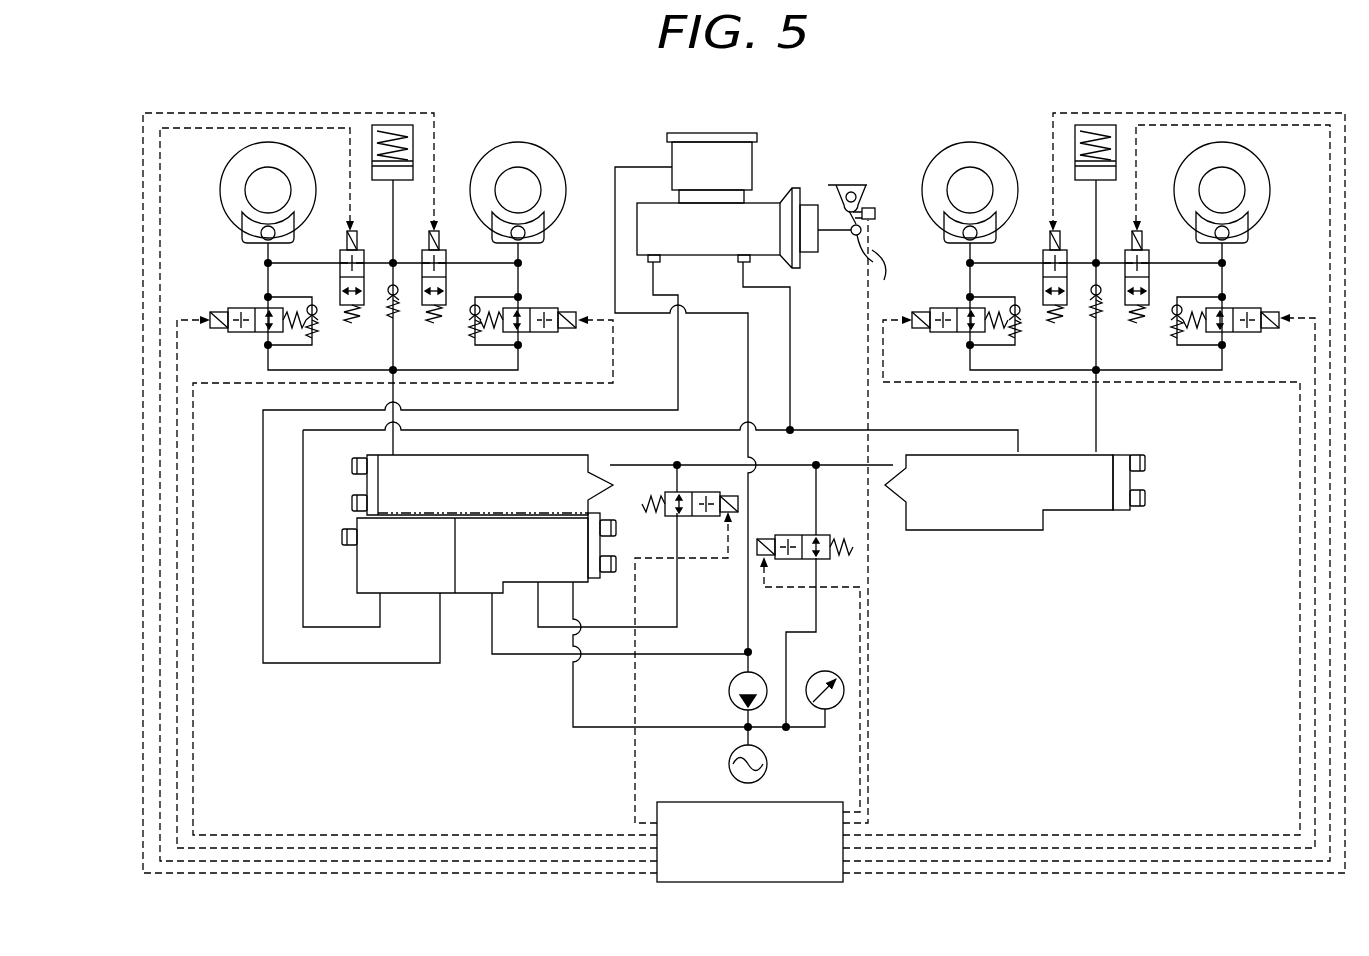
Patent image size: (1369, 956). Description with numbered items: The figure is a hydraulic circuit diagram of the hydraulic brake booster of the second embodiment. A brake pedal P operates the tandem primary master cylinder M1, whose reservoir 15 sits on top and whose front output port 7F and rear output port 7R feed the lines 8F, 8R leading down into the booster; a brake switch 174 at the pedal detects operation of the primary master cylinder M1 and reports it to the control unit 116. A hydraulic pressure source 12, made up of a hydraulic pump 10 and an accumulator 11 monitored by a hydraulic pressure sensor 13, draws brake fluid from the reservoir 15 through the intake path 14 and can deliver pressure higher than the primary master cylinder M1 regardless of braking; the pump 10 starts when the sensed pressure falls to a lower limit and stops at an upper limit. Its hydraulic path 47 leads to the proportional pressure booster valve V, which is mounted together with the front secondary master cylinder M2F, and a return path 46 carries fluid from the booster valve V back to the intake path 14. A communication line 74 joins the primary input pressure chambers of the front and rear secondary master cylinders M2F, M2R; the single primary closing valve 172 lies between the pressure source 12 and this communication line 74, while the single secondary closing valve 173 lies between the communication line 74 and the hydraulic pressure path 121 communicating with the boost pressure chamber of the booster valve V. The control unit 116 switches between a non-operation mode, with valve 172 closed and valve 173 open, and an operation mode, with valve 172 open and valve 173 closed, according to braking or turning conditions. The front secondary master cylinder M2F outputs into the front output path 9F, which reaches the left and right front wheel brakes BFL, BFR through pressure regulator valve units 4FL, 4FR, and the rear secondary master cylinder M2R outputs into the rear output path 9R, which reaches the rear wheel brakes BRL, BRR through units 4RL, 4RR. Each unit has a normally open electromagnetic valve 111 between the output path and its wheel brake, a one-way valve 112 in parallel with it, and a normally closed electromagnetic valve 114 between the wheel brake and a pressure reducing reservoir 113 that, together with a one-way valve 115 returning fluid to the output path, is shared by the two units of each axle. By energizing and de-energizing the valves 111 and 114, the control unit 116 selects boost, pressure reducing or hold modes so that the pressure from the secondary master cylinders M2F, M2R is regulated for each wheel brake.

The left front wheel brake BFL is at (226, 222).
The right front wheel brake BFR is at (555, 152).
The left rear wheel brake BRL is at (935, 156).
The right rear wheel brake BRR is at (1257, 155).
The pressure reducing reservoir 113 is at (414, 138).
The normally closed electromagnetic valve 114 is at (340, 250).
The one-way valve 115 is at (399, 300).
The one-way valve 112 is at (318, 318).
The normally open electromagnetic valve 111 is at (245, 333).
The pressure regulator valve unit 4FL is at (262, 352).
The pressure regulator valve unit 4FR is at (541, 292).
The pressure regulator valve unit 4RL is at (950, 293).
The pressure regulator valve unit 4RR is at (1240, 335).
The reservoir 15 is at (698, 177).
The primary master cylinder M1 is at (690, 242).
The front output port 7F is at (660, 263).
The rear output port 7R is at (752, 263).
The brake switch 174 is at (860, 210).
The brake pedal P is at (880, 262).
The front brake line 8F is at (338, 664).
The rear brake line 8R is at (836, 430).
The front output path 9F is at (393, 440).
The rear output path 9R is at (1100, 432).
The intake path 14 is at (748, 372).
The communication line 74 is at (708, 463).
The hydraulic pressure path 121 is at (677, 590).
The return path 46 is at (522, 656).
The hydraulic path 47 is at (590, 730).
The front secondary master cylinder M2F is at (448, 500).
The rear secondary master cylinder M2R is at (951, 505).
The proportional pressure booster valve V is at (517, 558).
The primary closing valve 172 is at (796, 535).
The secondary closing valve 173 is at (668, 513).
The hydraulic pump 10 is at (729, 694).
The accumulator 11 is at (768, 766).
The hydraulic pressure source 12 is at (716, 751).
The hydraulic pressure sensor 13 is at (835, 672).
The control unit 116 is at (728, 856).